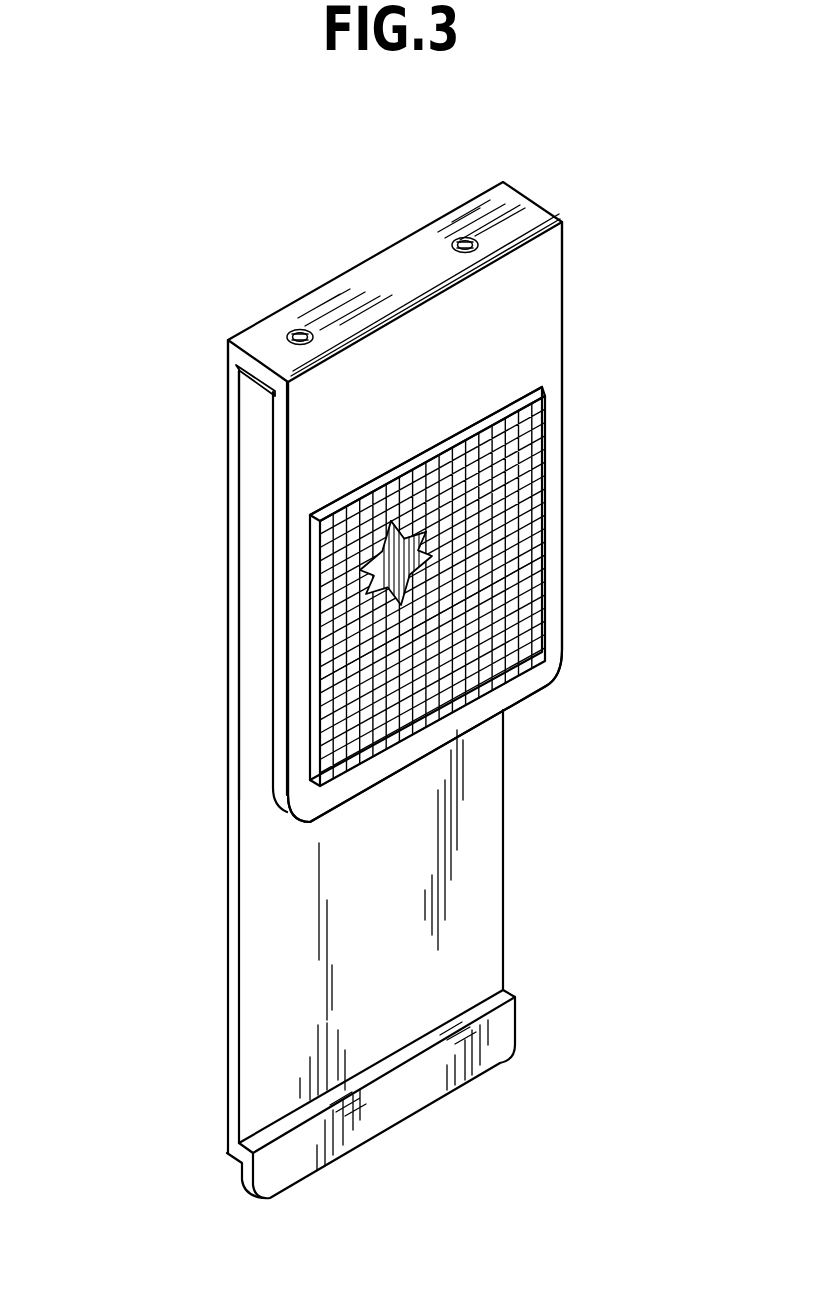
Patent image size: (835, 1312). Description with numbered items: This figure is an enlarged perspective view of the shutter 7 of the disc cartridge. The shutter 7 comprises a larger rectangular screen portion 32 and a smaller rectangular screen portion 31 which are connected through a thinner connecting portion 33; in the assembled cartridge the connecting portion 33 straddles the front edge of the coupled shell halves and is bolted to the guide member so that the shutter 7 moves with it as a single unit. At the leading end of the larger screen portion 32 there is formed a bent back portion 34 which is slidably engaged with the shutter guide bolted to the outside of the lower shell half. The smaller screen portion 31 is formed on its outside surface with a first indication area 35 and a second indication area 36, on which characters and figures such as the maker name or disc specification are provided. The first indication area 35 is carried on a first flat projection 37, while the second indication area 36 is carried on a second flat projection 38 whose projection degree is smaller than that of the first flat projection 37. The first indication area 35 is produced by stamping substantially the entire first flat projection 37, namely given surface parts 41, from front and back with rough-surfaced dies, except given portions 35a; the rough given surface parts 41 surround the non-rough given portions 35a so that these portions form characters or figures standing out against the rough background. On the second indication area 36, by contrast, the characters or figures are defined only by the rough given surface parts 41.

The shutter 7 is at (196, 337).
The smaller screen portion 31 is at (278, 542).
The larger screen portion 32 is at (232, 402).
The thinner connecting portion 33 is at (257, 378).
The bent back portion 34 is at (268, 1170).
The first indication area 35 is at (552, 467).
The given portions 35a is at (483, 678).
The second indication area 36 is at (478, 360).
The first flat projection 37 is at (532, 386).
The second flat projection 38 is at (453, 333).
The given surface part 41 is at (440, 334).